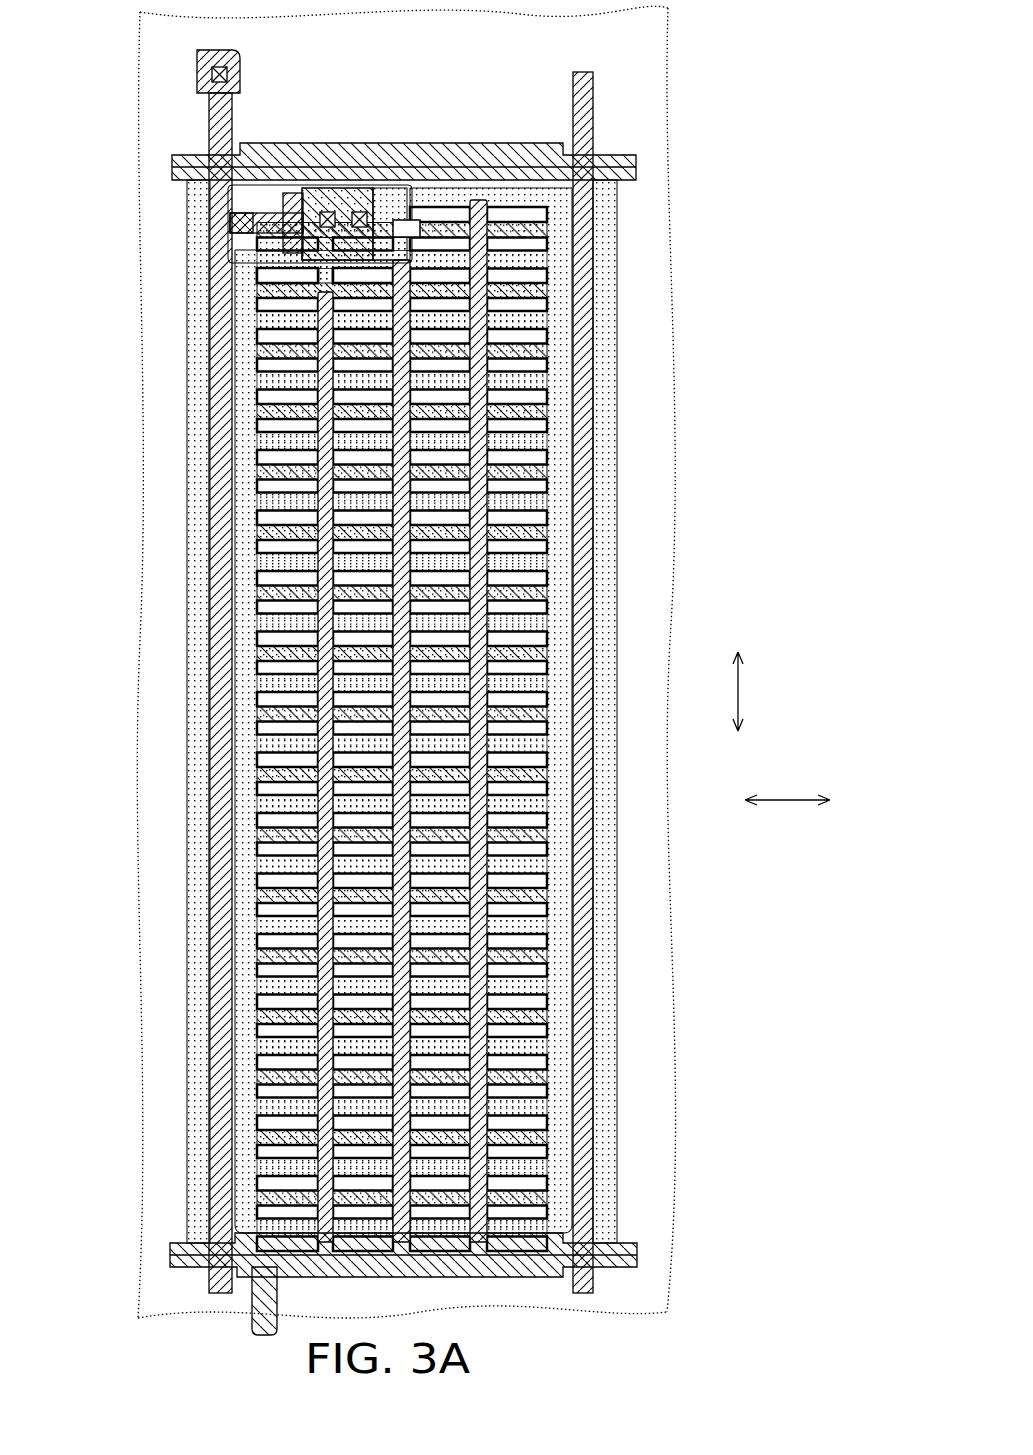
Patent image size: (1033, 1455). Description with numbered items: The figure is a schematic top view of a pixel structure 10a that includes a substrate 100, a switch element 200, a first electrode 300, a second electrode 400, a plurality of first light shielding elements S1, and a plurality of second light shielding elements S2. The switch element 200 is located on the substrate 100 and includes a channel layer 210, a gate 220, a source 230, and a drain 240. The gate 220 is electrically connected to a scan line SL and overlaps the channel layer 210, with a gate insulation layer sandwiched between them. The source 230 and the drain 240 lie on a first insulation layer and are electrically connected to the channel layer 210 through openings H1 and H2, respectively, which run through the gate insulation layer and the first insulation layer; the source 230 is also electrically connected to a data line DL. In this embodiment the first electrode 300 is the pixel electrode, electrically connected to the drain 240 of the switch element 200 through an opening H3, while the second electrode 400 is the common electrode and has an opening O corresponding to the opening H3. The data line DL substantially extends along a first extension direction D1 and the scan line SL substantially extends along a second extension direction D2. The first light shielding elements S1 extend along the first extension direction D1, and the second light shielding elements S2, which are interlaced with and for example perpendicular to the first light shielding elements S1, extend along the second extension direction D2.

The substrate 100 is at (668, 48).
The switch element 200 is at (435, 43).
The channel layer 210 is at (310, 195).
The gate 220 is at (340, 190).
The source 230 is at (243, 197).
The drain 240 is at (392, 192).
The first electrode 300 is at (218, 1210).
The second electrode 400 is at (200, 1152).
The pixel structure 10a is at (800, 1268).
The opening H1 is at (212, 72).
The opening H2 is at (335, 212).
The opening H3 is at (365, 212).
The opening O is at (405, 228).
The scan line SL is at (630, 150).
The data line DL is at (218, 428).
The first light shielding elements S1 is at (237, 312).
The second light shielding elements S2 is at (237, 370).
The first extension direction D1 is at (753, 691).
The second extension direction D2 is at (787, 786).